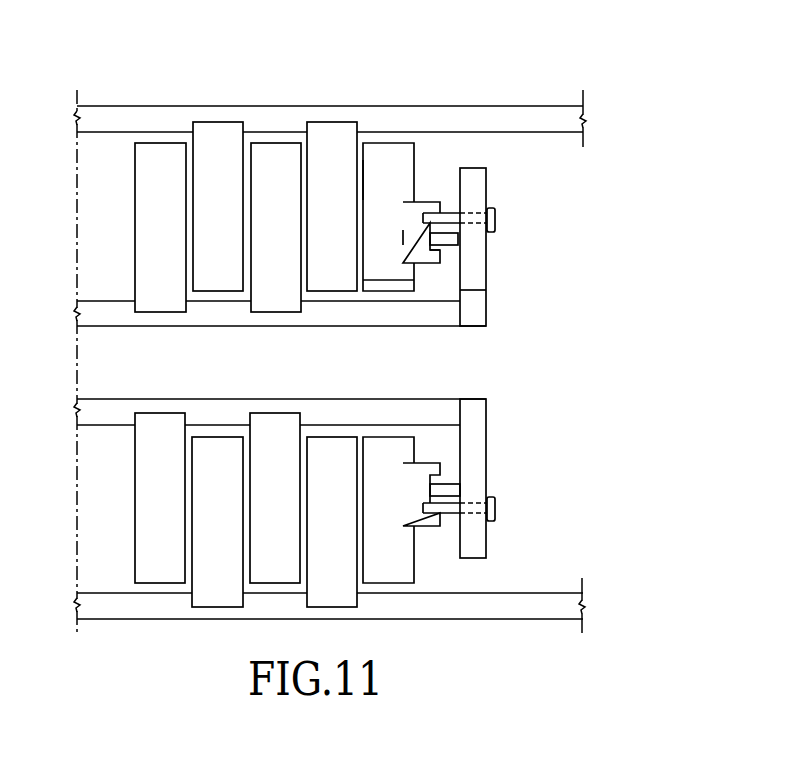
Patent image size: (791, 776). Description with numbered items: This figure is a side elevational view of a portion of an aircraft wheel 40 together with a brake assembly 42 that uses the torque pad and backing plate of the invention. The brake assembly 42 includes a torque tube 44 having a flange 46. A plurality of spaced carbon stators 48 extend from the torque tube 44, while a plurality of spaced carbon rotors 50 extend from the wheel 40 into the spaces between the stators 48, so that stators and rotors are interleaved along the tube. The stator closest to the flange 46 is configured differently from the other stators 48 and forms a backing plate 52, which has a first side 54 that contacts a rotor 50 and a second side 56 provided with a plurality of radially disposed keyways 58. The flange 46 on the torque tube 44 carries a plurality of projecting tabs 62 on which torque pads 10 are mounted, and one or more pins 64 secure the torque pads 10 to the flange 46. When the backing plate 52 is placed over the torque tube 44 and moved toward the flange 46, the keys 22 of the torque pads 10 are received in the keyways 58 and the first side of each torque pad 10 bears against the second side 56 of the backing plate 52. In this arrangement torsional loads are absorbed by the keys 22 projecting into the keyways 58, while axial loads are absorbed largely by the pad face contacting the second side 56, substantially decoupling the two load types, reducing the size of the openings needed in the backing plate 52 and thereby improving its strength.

The torque pad 10 is at (435, 254).
The key 22 is at (408, 238).
The aircraft wheel 40 is at (466, 110).
The brake assembly 42 is at (475, 267).
The torque tube 44 is at (467, 322).
The flange 46 is at (475, 300).
The carbon stators 48 is at (273, 300).
The carbon rotors 50 is at (328, 130).
The backing plate 52 is at (397, 273).
The first side 54 is at (362, 190).
The second side 56 is at (407, 162).
The keyways 58 is at (412, 267).
The projecting tabs 62 is at (446, 238).
The pins 64 is at (447, 213).